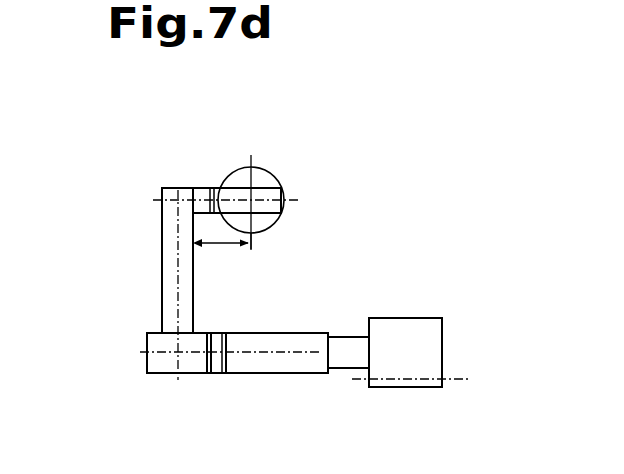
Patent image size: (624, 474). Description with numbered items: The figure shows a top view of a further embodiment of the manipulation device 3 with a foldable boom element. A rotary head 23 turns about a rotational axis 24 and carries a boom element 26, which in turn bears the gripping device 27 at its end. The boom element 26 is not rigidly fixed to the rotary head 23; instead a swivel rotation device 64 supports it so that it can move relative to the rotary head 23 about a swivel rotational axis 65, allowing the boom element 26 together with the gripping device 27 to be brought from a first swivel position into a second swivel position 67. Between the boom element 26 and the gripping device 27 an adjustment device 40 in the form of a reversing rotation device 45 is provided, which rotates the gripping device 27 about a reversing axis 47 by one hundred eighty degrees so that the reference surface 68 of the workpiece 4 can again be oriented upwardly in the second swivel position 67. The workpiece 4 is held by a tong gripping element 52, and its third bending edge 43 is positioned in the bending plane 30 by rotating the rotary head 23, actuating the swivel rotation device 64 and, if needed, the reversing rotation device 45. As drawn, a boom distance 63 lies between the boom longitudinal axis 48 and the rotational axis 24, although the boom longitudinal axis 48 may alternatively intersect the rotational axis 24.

The manipulation device 3 is at (343, 203).
The workpiece 4 is at (412, 328).
The rotary head 23 is at (251, 198).
The rotational axis 24 is at (258, 188).
The boom element 26 is at (162, 262).
The gripping device 27 is at (268, 372).
The bending plane 30 is at (463, 377).
The adjustment device 40 is at (214, 365).
The third bending edge 43 is at (414, 377).
The reversing rotation device 45 is at (222, 402).
The reversing axis 47 is at (264, 350).
The boom longitudinal axis 48 is at (176, 301).
The tong gripping element 52 is at (348, 343).
The boom distance 63 is at (214, 248).
The swivel rotation device 64 is at (139, 203).
The swivel rotational axis 65 is at (223, 191).
The second swivel position 67 is at (130, 363).
The reference surface 68 is at (393, 325).